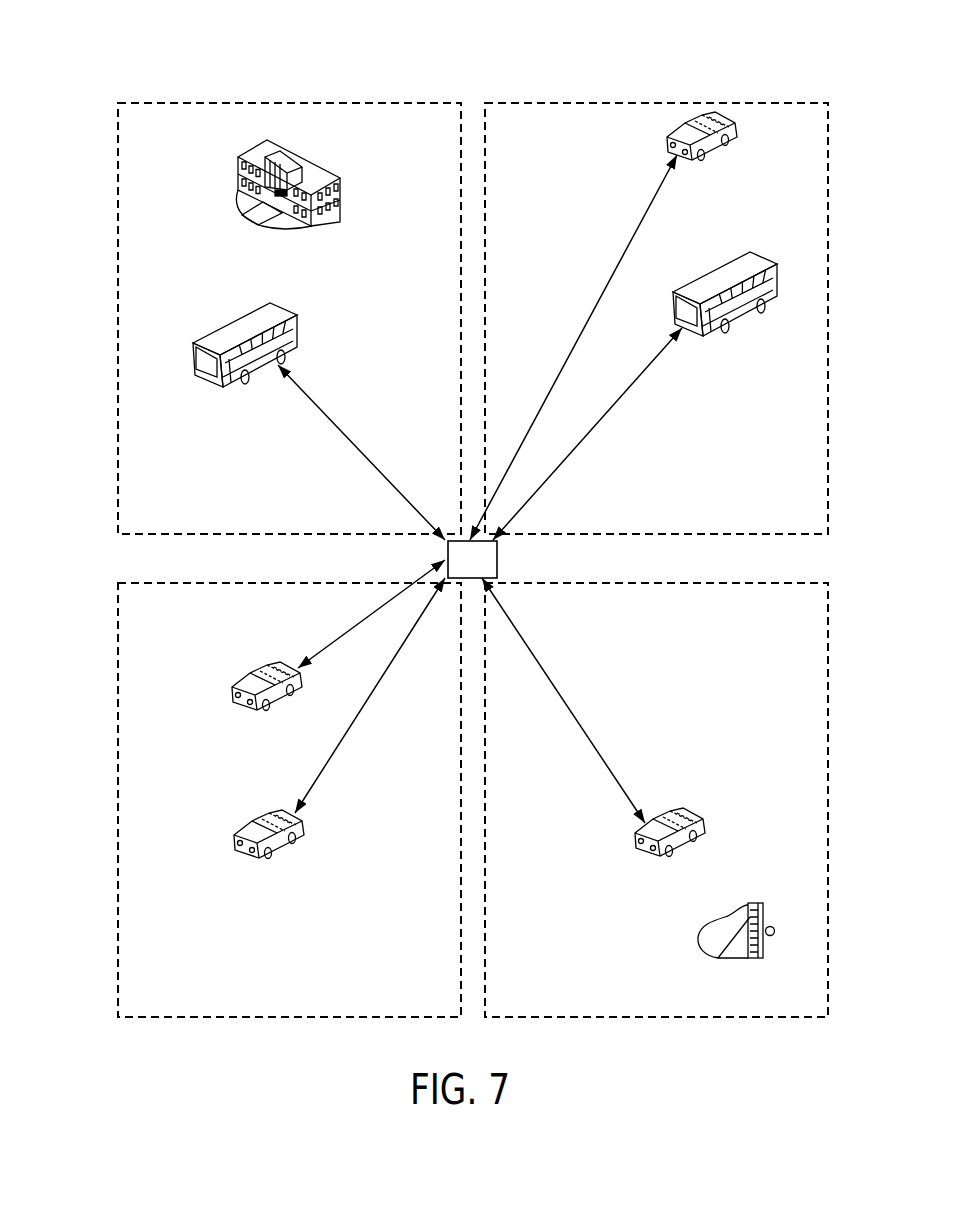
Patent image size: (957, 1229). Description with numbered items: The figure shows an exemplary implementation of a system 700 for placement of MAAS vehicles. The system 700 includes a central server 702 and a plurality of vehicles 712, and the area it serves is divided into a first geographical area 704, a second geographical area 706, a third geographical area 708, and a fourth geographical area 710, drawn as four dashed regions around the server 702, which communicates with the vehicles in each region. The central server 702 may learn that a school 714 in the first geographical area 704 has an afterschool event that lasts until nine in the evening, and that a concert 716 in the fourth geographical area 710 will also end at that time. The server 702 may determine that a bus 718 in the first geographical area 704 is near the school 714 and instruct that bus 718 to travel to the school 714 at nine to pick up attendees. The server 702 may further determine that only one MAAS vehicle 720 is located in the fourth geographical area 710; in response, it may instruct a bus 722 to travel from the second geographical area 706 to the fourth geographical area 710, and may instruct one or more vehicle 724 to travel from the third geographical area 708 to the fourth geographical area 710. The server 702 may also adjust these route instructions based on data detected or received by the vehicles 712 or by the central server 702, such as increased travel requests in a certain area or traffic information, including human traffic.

The system 700 is at (106, 91).
The central server 702 is at (489, 572).
The first geographical area 704 is at (460, 230).
The second geographical area 706 is at (487, 227).
The third geographical area 708 is at (117, 592).
The fourth geographical area 710 is at (828, 583).
The vehicles 712 is at (239, 671).
The school 714 is at (240, 167).
The concert 716 is at (752, 905).
The bus 718 is at (232, 322).
The MAAS vehicle 720 is at (690, 810).
The bus 722 is at (737, 320).
The vehicle 724 is at (237, 835).